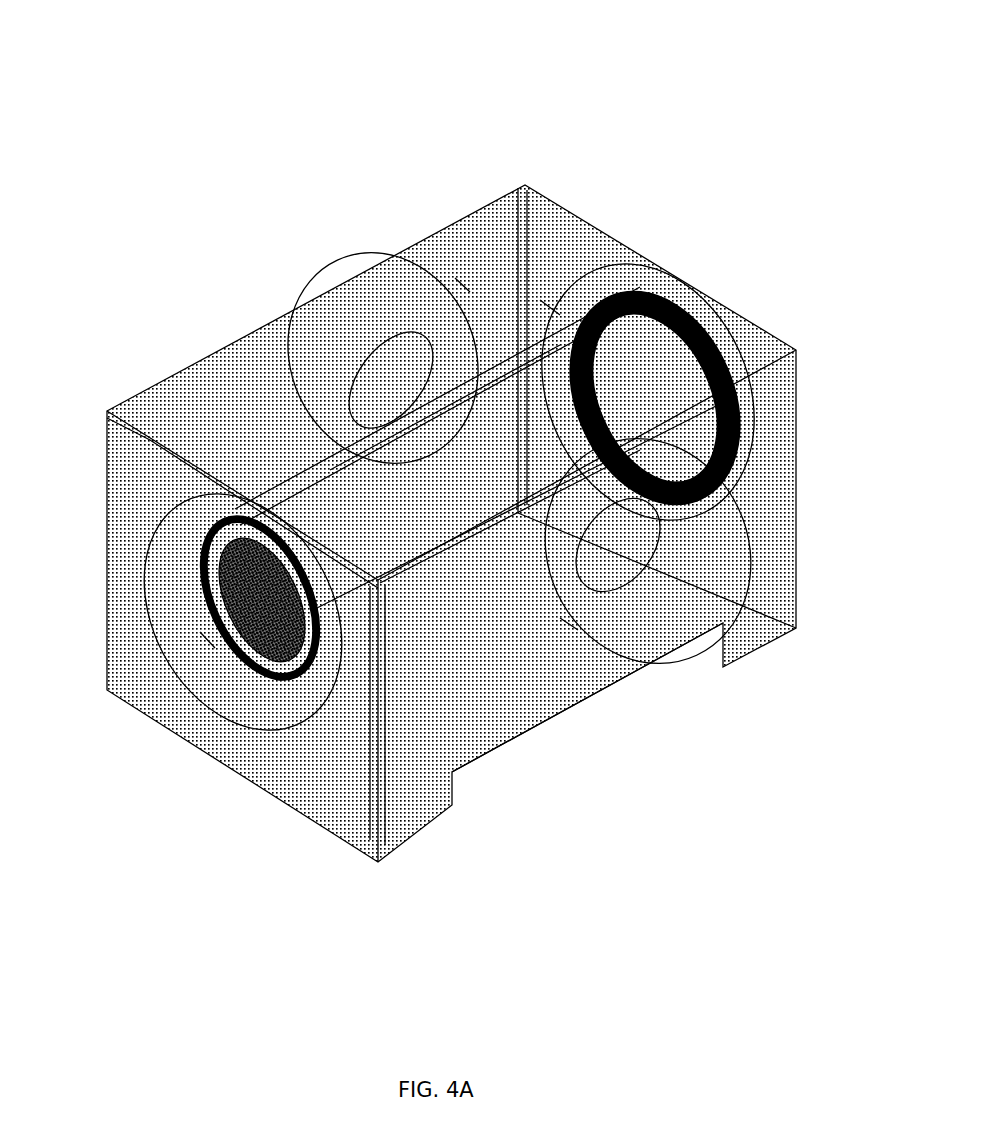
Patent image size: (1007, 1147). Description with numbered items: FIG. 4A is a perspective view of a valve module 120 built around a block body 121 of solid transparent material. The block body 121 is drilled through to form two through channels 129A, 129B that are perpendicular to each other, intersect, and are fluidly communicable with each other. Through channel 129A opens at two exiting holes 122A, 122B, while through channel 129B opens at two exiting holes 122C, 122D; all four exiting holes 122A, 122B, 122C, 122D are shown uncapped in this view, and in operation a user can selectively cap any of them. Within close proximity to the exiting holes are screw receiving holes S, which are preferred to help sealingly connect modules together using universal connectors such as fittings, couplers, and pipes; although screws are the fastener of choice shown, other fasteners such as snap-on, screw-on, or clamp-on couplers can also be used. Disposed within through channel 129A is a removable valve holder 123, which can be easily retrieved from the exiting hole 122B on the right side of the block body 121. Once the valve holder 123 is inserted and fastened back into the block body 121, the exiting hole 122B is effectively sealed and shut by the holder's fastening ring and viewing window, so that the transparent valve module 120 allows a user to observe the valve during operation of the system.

The valve module 120 is at (745, 80).
The block body 121 is at (180, 370).
The exiting hole 122A is at (200, 596).
The exiting hole 122B is at (705, 320).
The exiting hole 122C is at (622, 540).
The exiting hole 122D is at (380, 357).
The valve holder 123 is at (376, 590).
The through channel 129A is at (430, 605).
The through channel 129B is at (455, 355).
The screw receiving holes S is at (462, 285).